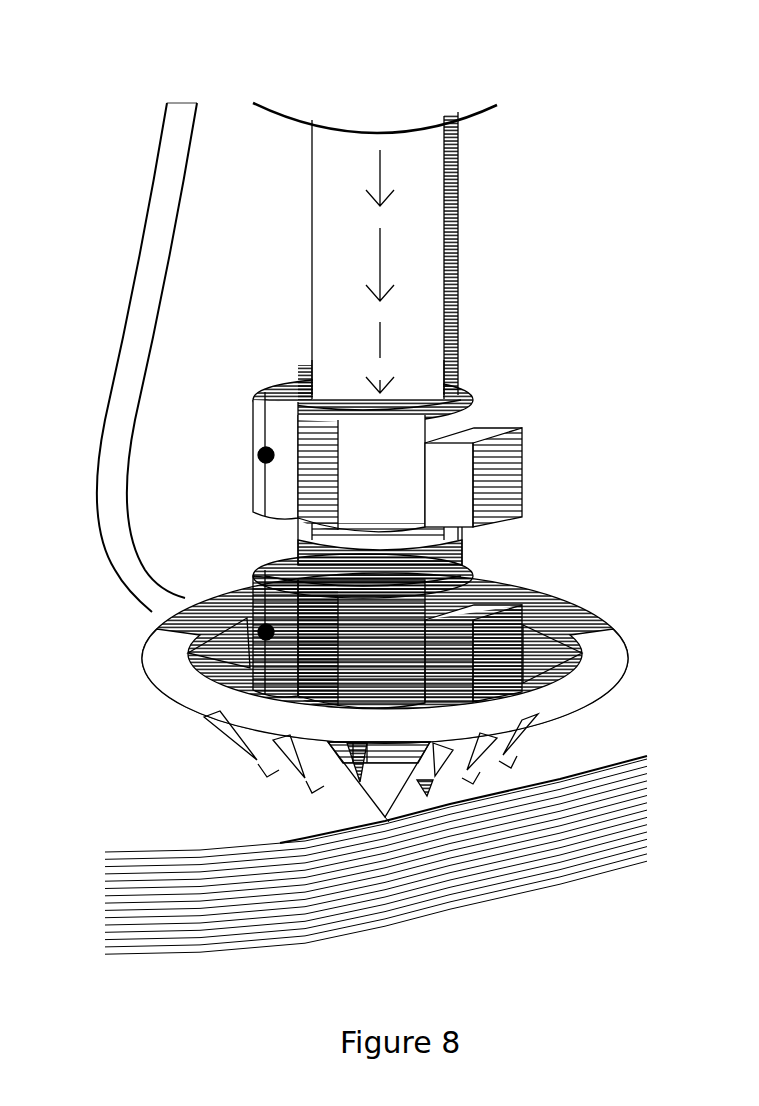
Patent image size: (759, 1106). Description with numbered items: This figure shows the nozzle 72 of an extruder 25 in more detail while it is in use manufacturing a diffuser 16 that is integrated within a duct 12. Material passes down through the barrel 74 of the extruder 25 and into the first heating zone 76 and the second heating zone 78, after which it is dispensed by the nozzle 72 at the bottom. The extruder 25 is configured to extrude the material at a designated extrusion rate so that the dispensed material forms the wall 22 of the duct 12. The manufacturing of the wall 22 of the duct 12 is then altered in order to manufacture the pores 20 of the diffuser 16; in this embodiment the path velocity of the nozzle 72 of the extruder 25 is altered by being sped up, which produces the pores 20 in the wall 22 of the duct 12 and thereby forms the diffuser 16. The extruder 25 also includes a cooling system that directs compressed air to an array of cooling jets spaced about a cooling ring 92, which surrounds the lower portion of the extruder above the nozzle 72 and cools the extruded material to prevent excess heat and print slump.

The duct 12 is at (340, 909).
The diffuser 16 is at (386, 820).
The pores 20 is at (305, 838).
The wall 22 is at (218, 880).
The extruder 25 is at (214, 68).
The nozzle 72 is at (392, 817).
The barrel 74 is at (385, 272).
The first heating zone 76 is at (410, 452).
The second heating zone 78 is at (385, 632).
The cooling ring 92 is at (355, 720).